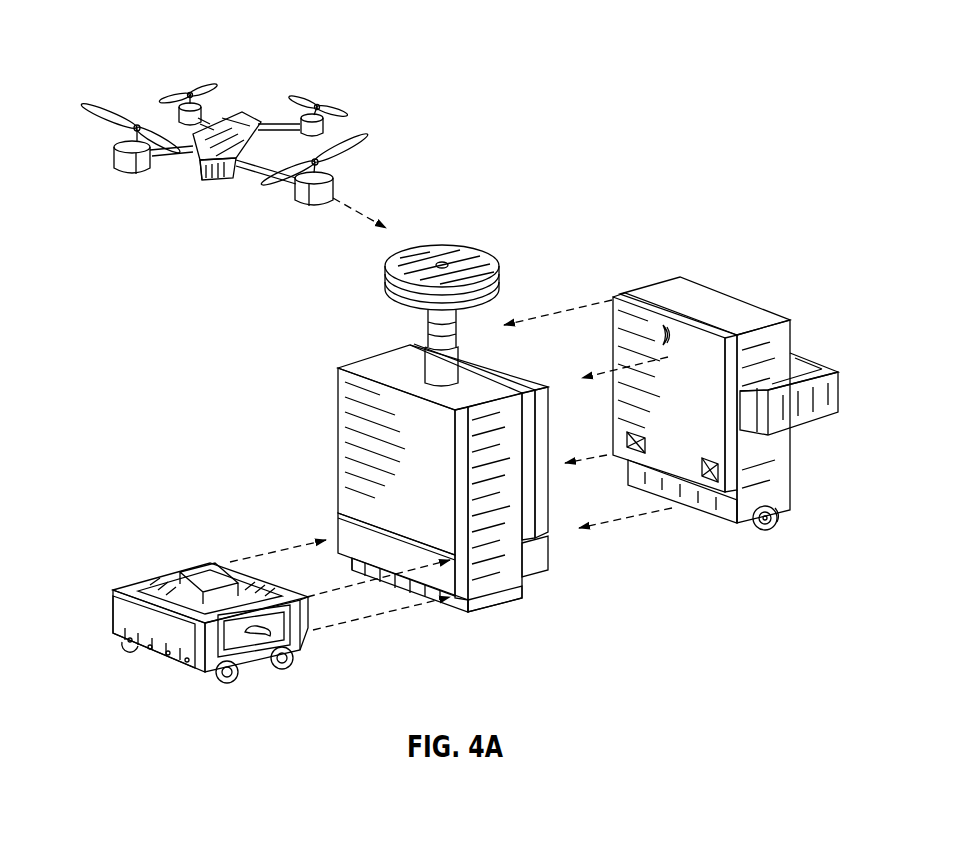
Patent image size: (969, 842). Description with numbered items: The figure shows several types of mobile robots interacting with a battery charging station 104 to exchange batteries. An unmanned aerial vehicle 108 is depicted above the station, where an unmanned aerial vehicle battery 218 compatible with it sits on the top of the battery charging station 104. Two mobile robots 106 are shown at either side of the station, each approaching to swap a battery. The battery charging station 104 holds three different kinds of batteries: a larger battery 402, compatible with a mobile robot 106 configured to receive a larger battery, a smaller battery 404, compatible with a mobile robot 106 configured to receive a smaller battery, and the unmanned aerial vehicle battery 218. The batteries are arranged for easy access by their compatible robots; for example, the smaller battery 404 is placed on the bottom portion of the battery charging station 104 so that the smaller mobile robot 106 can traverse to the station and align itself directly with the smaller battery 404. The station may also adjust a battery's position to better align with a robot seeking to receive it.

The unmanned aerial vehicle 108 is at (261, 52).
The unmanned aerial vehicle battery 218 is at (487, 250).
The battery charging station 104 is at (528, 610).
The larger battery 402 is at (356, 394).
The smaller battery 404 is at (351, 540).
The mobile robot 106 is at (783, 545).